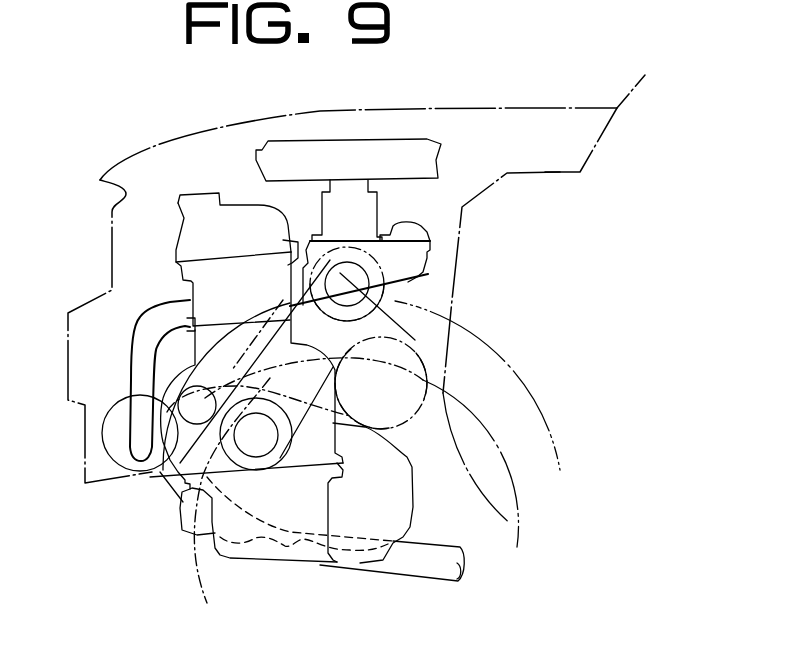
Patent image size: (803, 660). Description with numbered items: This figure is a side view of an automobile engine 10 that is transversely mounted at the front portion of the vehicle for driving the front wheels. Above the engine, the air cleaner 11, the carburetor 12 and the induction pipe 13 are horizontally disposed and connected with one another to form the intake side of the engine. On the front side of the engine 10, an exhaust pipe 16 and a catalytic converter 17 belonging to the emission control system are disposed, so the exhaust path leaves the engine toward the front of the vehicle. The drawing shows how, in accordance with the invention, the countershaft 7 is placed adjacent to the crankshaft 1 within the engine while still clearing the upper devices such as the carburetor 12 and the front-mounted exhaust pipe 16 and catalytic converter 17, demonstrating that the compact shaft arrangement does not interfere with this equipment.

The crankshaft 1 is at (268, 445).
The countershaft 7 is at (208, 396).
The engine 10 is at (177, 228).
The air cleaner 11 is at (438, 166).
The carburetor 12 is at (379, 221).
The induction pipe 13 is at (424, 280).
The exhaust pipe 16 is at (133, 331).
The catalytic converter 17 is at (110, 398).